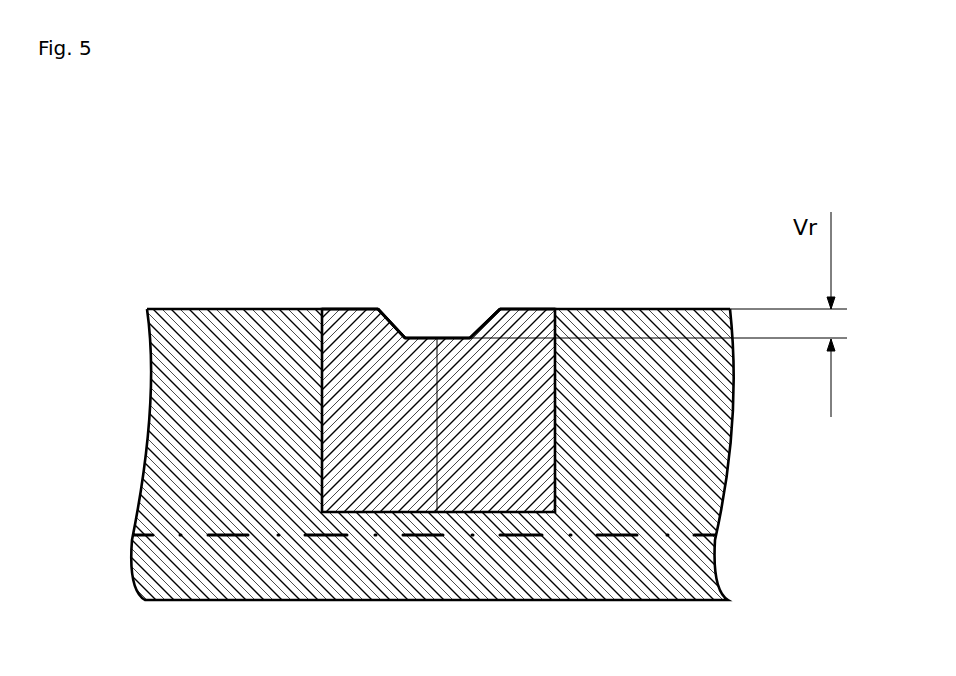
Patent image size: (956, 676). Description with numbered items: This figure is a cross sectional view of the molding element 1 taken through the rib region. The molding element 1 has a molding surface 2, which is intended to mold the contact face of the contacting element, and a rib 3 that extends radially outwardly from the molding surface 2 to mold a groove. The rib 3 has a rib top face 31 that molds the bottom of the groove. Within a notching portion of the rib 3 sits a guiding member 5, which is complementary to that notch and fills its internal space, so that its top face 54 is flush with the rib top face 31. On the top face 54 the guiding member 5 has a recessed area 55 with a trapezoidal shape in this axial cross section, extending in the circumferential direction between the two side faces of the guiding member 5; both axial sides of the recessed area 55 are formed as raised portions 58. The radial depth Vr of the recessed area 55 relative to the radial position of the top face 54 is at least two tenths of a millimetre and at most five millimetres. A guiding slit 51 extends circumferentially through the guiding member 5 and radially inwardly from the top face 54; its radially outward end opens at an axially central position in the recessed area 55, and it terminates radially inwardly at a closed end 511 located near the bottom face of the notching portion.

The molding element 1 is at (134, 214).
The molding surface 2 is at (698, 530).
The rib 3 is at (655, 325).
The rib top face 31 is at (225, 308).
The guiding member 5 is at (420, 341).
The guiding slit 51 is at (440, 336).
The top face 54 is at (337, 308).
The recessed area 55 is at (418, 337).
The raised portions 58 is at (365, 327).
The closed end 511 is at (440, 498).